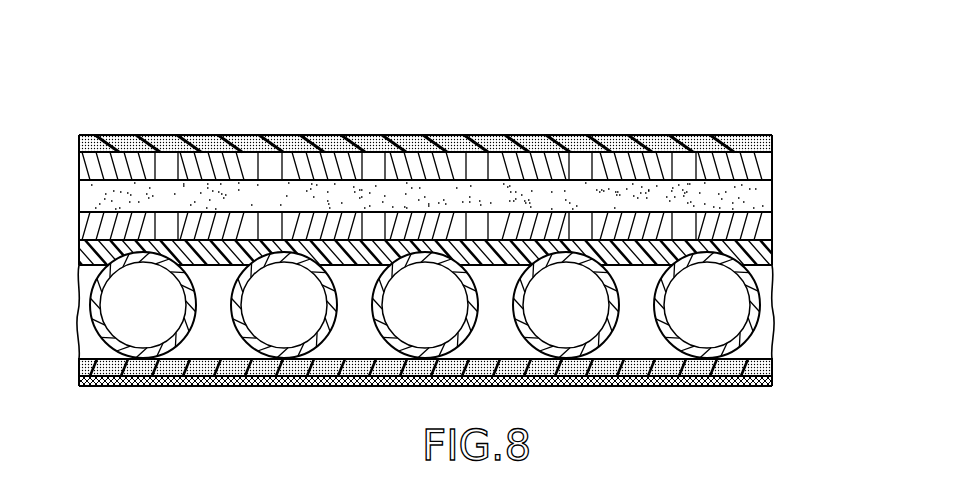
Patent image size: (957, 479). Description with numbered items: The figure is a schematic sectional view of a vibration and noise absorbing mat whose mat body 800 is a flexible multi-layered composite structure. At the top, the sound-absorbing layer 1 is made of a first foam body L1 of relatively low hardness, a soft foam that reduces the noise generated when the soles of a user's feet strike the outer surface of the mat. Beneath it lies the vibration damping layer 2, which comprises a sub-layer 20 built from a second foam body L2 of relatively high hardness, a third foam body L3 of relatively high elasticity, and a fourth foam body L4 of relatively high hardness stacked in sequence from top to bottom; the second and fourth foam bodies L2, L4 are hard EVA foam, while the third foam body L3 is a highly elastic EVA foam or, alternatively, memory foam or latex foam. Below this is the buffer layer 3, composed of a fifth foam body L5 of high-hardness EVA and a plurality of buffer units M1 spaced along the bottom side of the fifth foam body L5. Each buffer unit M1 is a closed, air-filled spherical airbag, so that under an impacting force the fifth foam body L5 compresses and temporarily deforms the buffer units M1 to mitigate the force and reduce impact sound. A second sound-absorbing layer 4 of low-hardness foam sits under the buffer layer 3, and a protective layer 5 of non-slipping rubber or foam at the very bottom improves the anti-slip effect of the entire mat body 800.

The mat body 800 is at (469, 220).
The sound-absorbing layer 1 is at (443, 140).
The vibration damping layer 2 is at (469, 195).
The buffer layer 3 is at (446, 299).
The sound-absorbing layer 4 is at (77, 359).
The protective layer 5 is at (78, 381).
The sub-layer 20 is at (484, 195).
The first foam body L1 is at (772, 142).
The second foam body L2 is at (757, 167).
The third foam body L3 is at (755, 195).
The fourth foam body L4 is at (458, 225).
The fifth foam body L5 is at (759, 252).
The buffer units M1 is at (759, 303).